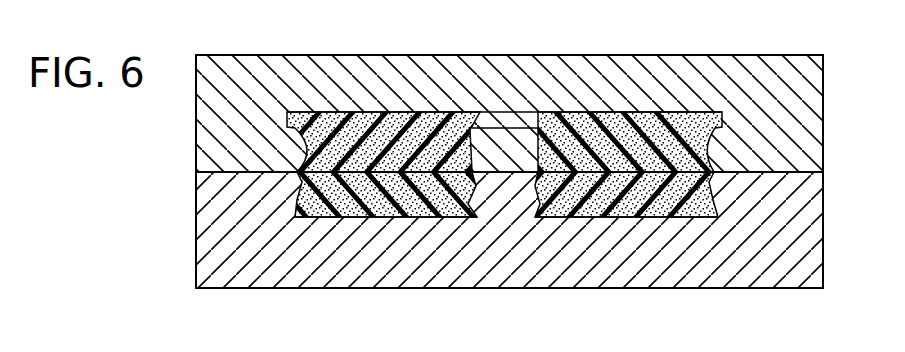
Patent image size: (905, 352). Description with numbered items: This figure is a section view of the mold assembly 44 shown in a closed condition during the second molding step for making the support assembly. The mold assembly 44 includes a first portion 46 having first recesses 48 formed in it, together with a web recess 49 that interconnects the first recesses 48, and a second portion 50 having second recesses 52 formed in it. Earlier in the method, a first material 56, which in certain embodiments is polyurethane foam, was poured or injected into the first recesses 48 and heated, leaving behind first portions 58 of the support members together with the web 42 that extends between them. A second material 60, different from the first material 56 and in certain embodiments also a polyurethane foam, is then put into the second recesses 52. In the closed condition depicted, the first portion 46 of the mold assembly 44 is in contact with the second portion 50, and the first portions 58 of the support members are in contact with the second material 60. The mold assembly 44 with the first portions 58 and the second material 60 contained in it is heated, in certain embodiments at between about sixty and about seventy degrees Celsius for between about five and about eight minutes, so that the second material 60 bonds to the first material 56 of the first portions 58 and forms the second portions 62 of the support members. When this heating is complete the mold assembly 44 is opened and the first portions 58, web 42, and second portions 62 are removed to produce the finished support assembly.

The web 42 is at (482, 112).
The mold assembly 44 is at (182, 178).
The first portion 46 is at (250, 68).
The first recess 48 is at (299, 126).
The web recess 49 is at (522, 128).
The second portion 50 is at (240, 277).
The second recess 52 is at (463, 203).
The first material 56 is at (428, 123).
The first portion of support member 58 is at (373, 112).
The second material 60 is at (382, 217).
The second portion of support member 62 is at (322, 217).